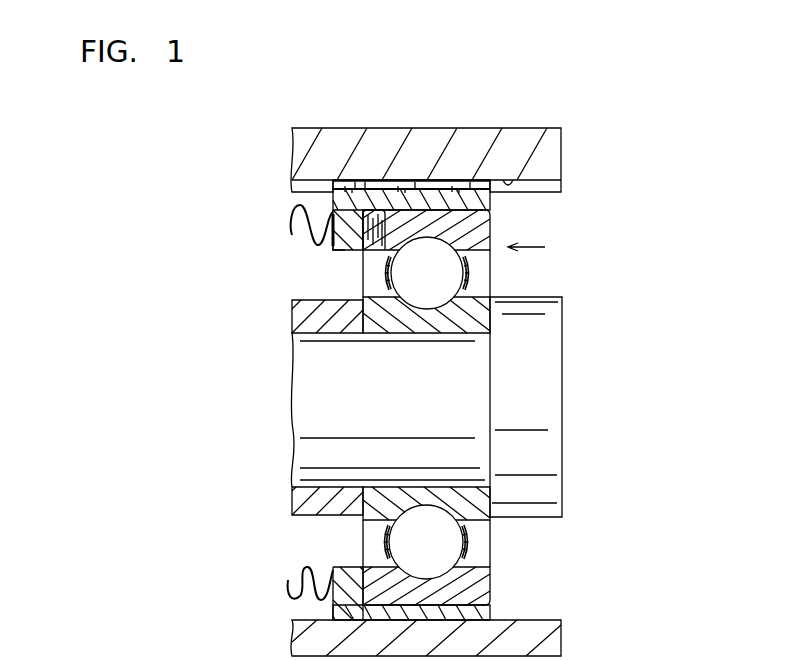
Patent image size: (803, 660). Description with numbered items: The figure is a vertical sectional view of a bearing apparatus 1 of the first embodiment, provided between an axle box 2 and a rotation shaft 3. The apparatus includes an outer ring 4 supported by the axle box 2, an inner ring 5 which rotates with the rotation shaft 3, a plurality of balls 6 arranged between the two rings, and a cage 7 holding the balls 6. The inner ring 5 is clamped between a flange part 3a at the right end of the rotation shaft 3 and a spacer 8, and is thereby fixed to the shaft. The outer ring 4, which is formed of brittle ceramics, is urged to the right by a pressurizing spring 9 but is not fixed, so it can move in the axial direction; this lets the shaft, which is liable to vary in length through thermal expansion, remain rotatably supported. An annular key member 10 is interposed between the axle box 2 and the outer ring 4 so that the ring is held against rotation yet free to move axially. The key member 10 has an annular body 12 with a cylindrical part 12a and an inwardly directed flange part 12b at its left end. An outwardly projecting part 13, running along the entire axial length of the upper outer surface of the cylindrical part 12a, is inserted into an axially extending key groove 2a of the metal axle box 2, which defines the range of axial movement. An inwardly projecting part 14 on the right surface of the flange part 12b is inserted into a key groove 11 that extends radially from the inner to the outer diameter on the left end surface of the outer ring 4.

The bearing apparatus 1 is at (535, 246).
The axle box 2 is at (561, 147).
The key groove 2a is at (518, 182).
The rotation shaft 3 is at (562, 405).
The flange part 3a is at (547, 323).
The outer ring 4 is at (492, 219).
The inner ring 5 is at (482, 318).
The balls 6 is at (448, 270).
The cage 7 is at (470, 283).
The spacer 8 is at (300, 318).
The pressurizing spring 9 is at (295, 214).
The key member 10 is at (493, 204).
The key groove 11 is at (360, 195).
The annular body 12 is at (452, 195).
The cylindrical part 12a is at (401, 195).
The inwardly directed flange part 12b is at (335, 250).
The outwardly projecting part 13 is at (340, 192).
The inwardly projecting part 14 is at (365, 255).